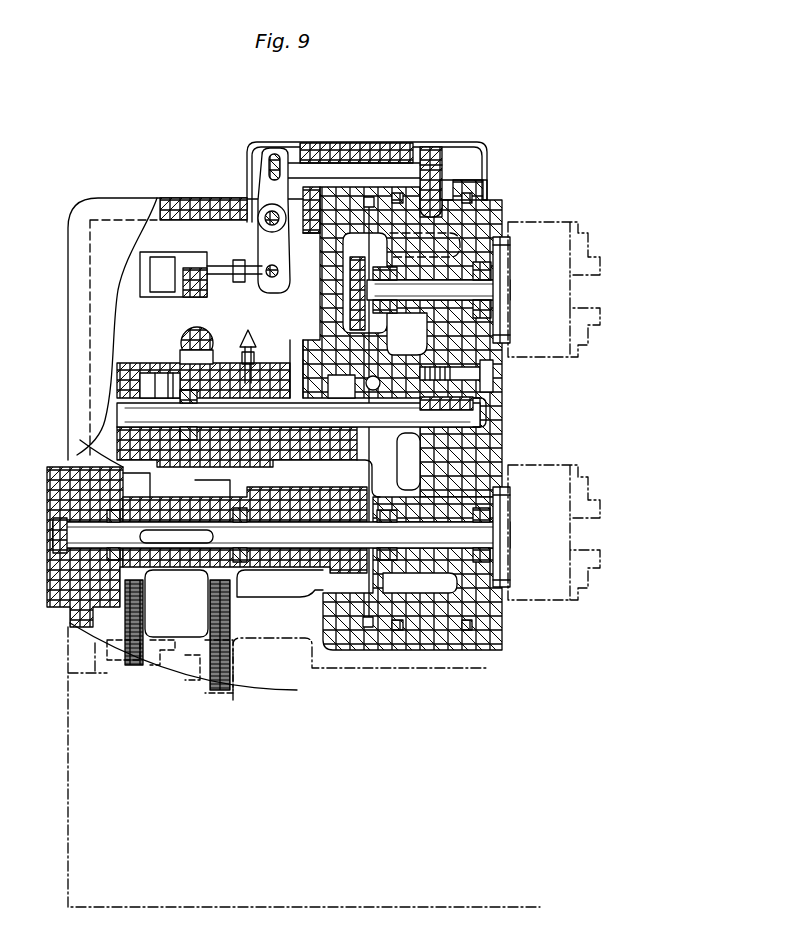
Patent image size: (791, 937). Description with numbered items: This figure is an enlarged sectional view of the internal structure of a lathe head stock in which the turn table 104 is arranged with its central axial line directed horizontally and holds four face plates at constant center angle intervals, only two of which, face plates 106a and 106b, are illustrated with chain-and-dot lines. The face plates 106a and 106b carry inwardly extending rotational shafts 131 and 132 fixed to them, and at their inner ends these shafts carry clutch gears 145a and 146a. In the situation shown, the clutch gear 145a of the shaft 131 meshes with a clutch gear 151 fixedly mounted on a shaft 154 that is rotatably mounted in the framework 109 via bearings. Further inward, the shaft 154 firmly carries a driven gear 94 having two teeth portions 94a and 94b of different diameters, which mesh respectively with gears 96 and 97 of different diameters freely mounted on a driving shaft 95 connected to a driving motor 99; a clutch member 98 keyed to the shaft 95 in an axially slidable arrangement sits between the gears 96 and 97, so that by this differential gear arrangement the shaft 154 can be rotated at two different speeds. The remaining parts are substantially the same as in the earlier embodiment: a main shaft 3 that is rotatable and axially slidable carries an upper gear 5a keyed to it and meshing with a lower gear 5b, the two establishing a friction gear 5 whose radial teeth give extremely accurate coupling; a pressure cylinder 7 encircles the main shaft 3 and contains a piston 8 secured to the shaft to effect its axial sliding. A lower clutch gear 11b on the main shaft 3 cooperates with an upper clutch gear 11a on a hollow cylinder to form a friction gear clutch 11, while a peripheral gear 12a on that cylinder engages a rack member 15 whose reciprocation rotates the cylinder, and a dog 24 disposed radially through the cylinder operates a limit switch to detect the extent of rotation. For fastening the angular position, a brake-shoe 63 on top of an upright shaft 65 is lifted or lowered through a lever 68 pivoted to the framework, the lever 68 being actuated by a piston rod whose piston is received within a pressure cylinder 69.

The main shaft 3 is at (265, 430).
The friction gear 5 is at (507, 330).
The upper gear 5a is at (480, 470).
The lower gear 5b is at (487, 437).
The pressure cylinder 7 is at (333, 350).
The piston 8 is at (354, 387).
The friction gear clutch 11 is at (167, 357).
The upper clutch gear 11a is at (175, 353).
The lower clutch gear 11b is at (143, 362).
The peripheral gear 12a is at (190, 473).
The rack member 15 is at (200, 328).
The dog 24 is at (246, 333).
The brake-shoe 63 is at (428, 147).
The upright shaft 65 is at (340, 163).
The lever 68 is at (260, 190).
The pressure cylinder 69 is at (155, 247).
The driven gear 94 is at (178, 560).
The teeth portion 94a is at (137, 483).
The teeth portion 94b is at (237, 497).
The driving shaft 95 is at (190, 690).
The gear 96 is at (127, 670).
The gear 97 is at (227, 693).
The clutch member 98 is at (168, 670).
The driving motor 99 is at (297, 693).
The turn table 104 is at (490, 207).
The face plate 106a is at (583, 487).
The face plate 106b is at (583, 243).
The framework 109 is at (367, 630).
The rotational shaft 131 is at (480, 533).
The rotational shaft 132 is at (480, 288).
The clutch gear 145a is at (362, 628).
The clutch gear 146a is at (312, 250).
The clutch gear 151 is at (322, 592).
The shaft 154 is at (260, 560).